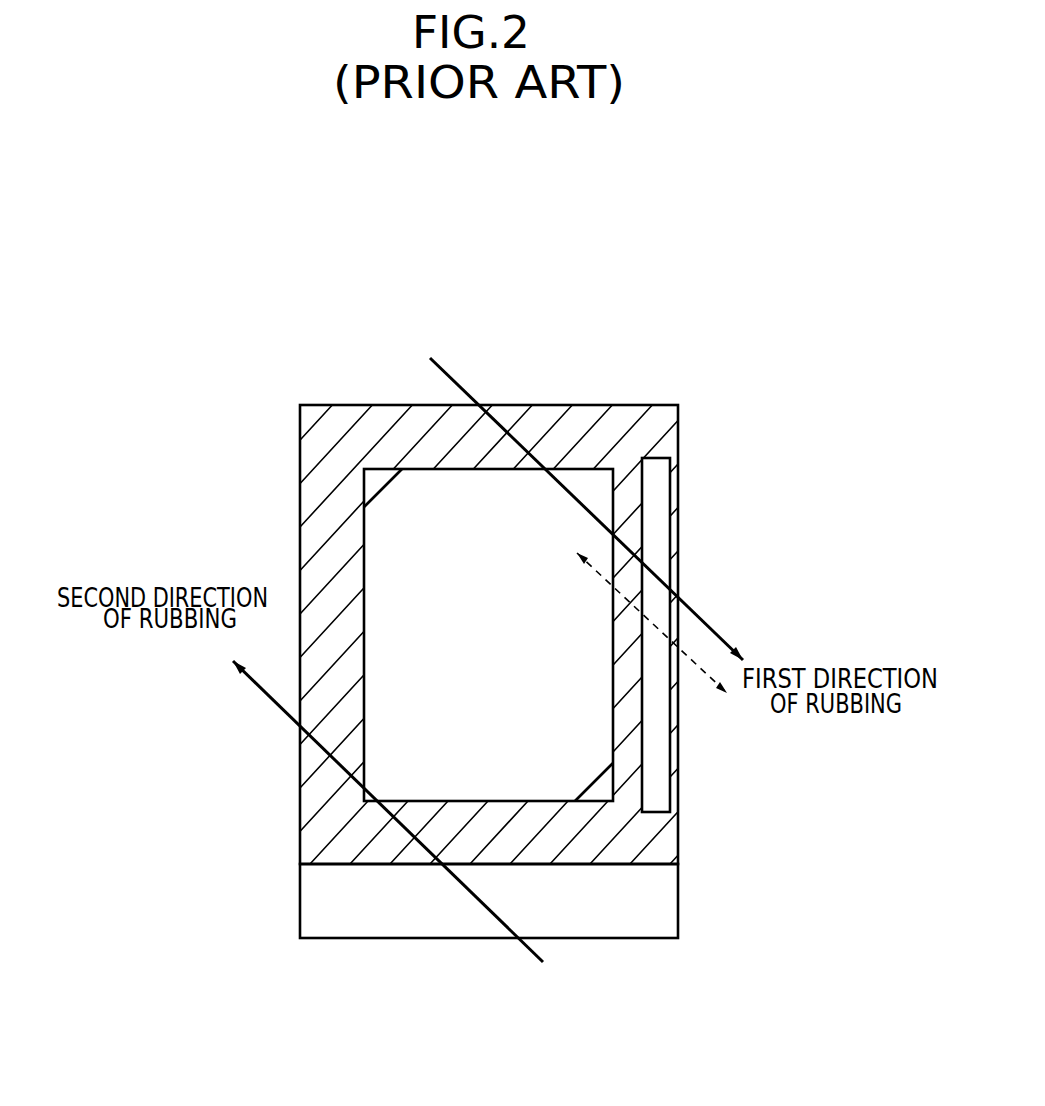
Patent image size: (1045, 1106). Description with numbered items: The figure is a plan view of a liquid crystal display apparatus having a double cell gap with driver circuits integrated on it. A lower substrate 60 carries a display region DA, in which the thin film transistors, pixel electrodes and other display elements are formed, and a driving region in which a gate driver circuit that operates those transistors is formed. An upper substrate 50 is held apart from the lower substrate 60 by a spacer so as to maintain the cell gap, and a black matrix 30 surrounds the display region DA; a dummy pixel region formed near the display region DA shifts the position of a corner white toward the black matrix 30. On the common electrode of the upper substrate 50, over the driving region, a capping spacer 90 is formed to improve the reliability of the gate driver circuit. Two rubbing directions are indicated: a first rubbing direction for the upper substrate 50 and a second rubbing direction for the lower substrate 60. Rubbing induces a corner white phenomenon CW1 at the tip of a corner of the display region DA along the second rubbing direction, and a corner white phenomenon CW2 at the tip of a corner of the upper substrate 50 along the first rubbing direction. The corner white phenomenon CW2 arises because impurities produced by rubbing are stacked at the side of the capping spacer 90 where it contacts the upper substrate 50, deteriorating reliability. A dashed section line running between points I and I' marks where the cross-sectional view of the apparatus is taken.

The black matrix 30 is at (326, 500).
The upper substrate 50 is at (290, 748).
The lower substrate 60 is at (290, 893).
The capping spacer 90 is at (662, 509).
The display region DA is at (504, 648).
The corner white phenomenon CW1 is at (370, 488).
The corner white phenomenon CW2 is at (605, 793).
The section line I-I' I is at (642, 614).
The section line I- I' is at (743, 705).